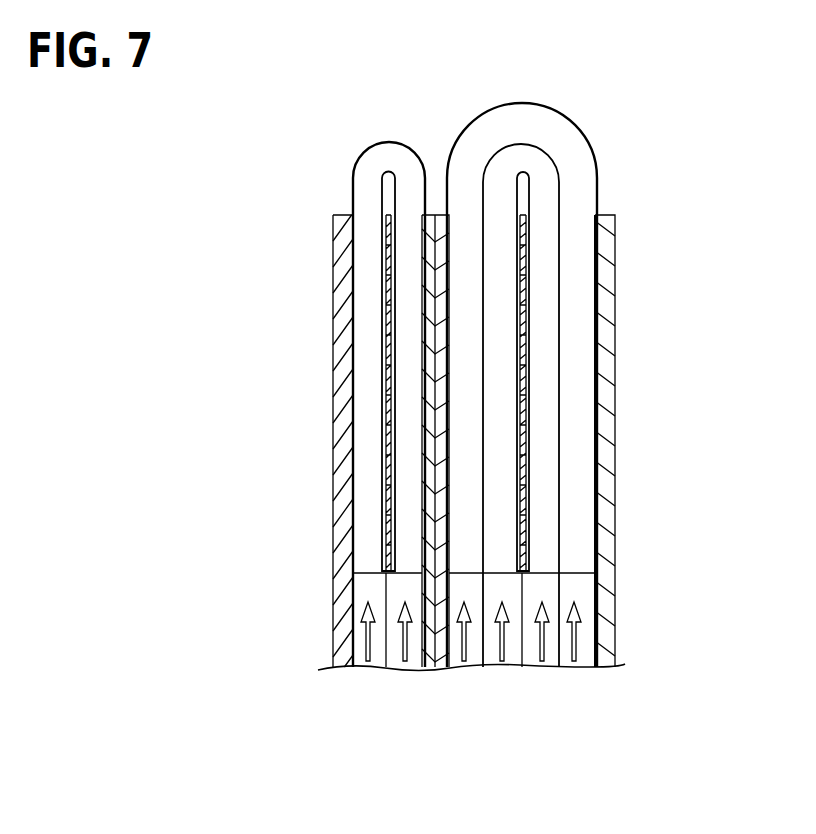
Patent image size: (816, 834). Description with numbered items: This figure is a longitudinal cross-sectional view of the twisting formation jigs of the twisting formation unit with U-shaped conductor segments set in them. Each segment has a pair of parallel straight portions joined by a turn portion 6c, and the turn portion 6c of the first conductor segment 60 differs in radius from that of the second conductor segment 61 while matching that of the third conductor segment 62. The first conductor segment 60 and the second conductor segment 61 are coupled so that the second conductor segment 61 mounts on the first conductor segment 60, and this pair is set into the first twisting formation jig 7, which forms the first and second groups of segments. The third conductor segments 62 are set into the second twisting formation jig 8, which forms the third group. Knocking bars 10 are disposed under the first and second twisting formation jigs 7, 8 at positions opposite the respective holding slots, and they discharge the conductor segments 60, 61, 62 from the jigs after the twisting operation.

The turn portion 6c is at (373, 155).
The first twisting formation jig 7 is at (629, 382).
The second twisting formation jig 8 is at (323, 302).
The knocking bars 10 is at (397, 594).
The first conductor segment 60 is at (572, 337).
The second conductor segment 61 is at (609, 271).
The third conductor segment 62 is at (338, 376).